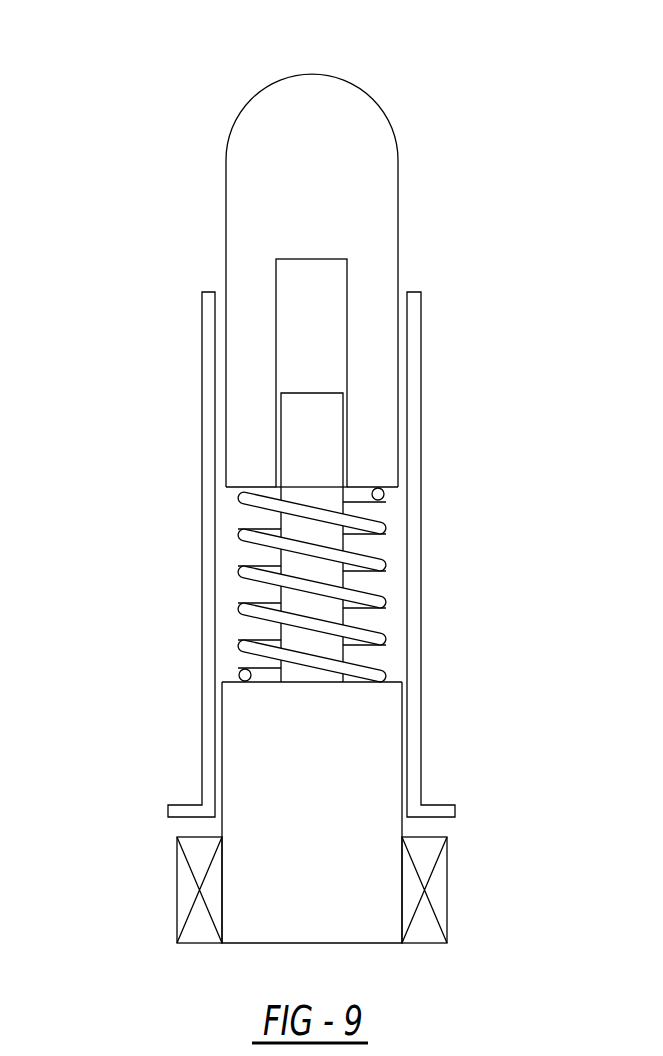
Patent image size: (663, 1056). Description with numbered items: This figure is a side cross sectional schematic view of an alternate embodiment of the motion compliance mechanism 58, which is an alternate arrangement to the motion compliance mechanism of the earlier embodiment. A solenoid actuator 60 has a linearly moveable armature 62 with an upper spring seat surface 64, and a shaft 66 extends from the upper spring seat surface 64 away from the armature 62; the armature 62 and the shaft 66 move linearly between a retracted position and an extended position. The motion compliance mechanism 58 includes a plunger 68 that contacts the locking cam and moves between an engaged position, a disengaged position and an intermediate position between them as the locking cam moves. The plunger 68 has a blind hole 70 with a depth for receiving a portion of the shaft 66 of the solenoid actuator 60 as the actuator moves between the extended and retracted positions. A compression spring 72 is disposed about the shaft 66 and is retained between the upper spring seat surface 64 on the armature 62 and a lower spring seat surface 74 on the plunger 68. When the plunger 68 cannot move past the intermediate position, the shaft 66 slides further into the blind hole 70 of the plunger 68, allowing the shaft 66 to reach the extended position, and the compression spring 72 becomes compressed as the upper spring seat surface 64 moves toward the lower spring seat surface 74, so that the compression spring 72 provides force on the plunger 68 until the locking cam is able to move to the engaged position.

The motion compliance mechanism 58 is at (480, 128).
The solenoid actuator 60 is at (177, 895).
The armature 62 is at (352, 733).
The upper spring seat surface 64 is at (394, 682).
The shaft 66 is at (322, 427).
The plunger 68 is at (350, 118).
The blind hole 70 is at (325, 285).
The compression spring 72 is at (384, 570).
The lower spring seat surface 74 is at (257, 490).